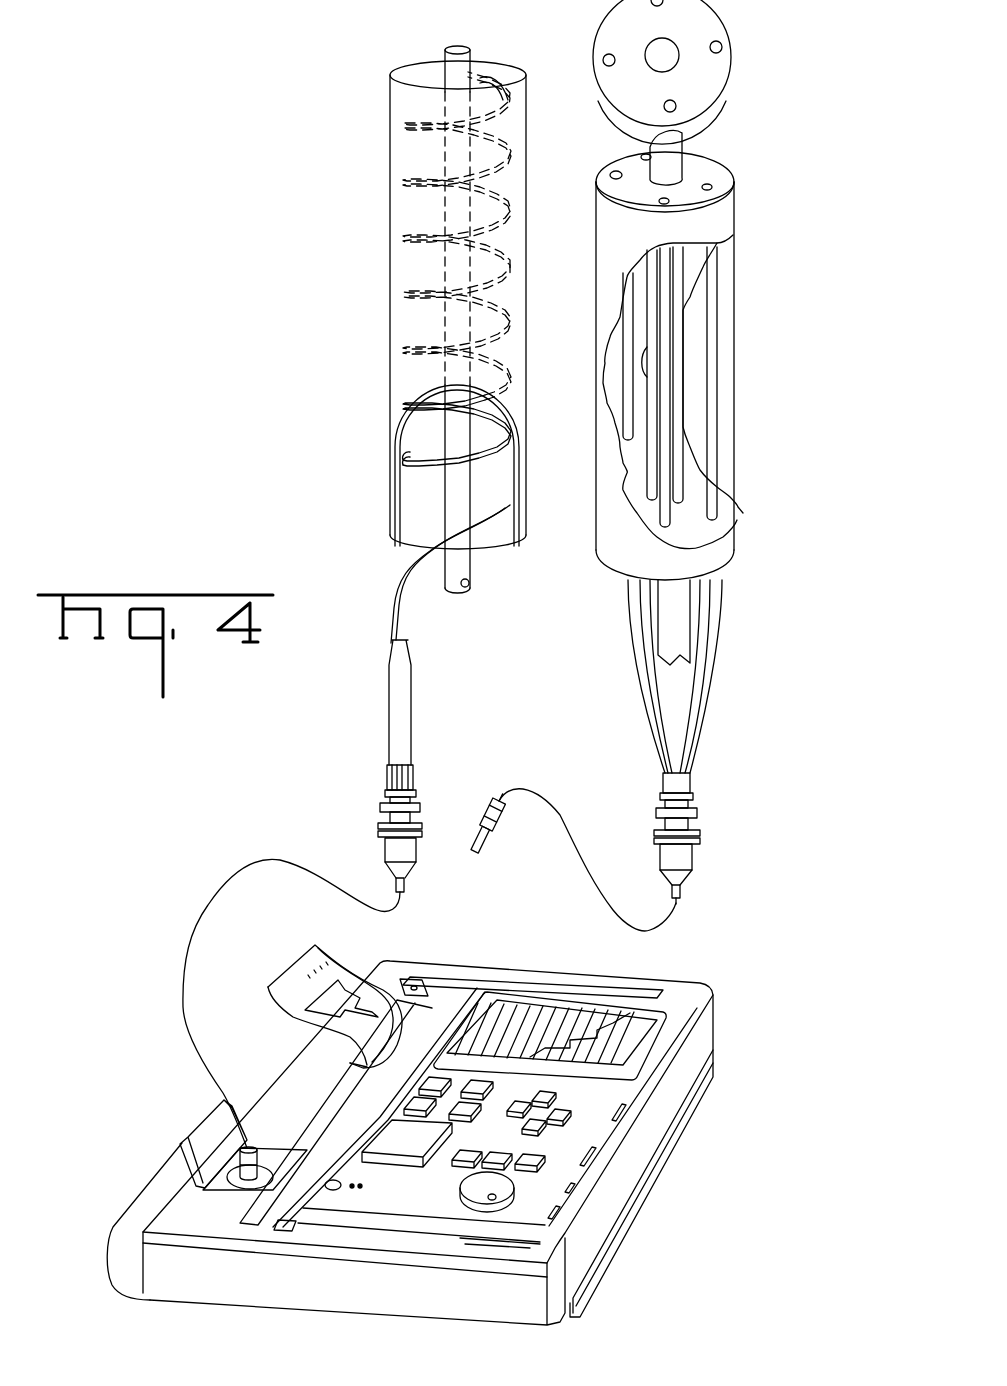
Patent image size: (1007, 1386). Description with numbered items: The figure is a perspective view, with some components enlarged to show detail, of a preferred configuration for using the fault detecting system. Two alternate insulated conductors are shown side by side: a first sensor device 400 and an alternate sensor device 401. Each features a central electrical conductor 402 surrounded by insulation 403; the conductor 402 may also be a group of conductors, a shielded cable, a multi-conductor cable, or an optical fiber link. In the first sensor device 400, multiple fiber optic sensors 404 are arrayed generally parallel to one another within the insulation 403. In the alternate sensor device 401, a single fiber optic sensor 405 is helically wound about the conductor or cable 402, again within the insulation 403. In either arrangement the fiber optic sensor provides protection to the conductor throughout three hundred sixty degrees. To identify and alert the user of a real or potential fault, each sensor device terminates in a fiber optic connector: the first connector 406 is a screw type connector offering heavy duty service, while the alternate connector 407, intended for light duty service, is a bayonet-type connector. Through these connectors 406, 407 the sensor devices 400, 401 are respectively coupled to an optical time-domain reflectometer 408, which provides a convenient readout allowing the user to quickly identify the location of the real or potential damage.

The insulated conductor (first sensor device) 400 is at (738, 500).
The insulated conductor (alternate sensor device) 401 is at (388, 415).
The central electrical conductor 402 is at (463, 592).
The insulation 403 is at (417, 497).
The fiber optic sensors 404 is at (713, 370).
The fiber optic sensor 405 is at (493, 468).
The fiber optic connector 406 is at (710, 832).
The fiber optic connector 407 is at (430, 838).
The optical time-domain reflectometer (OTDR) 408 is at (700, 1127).